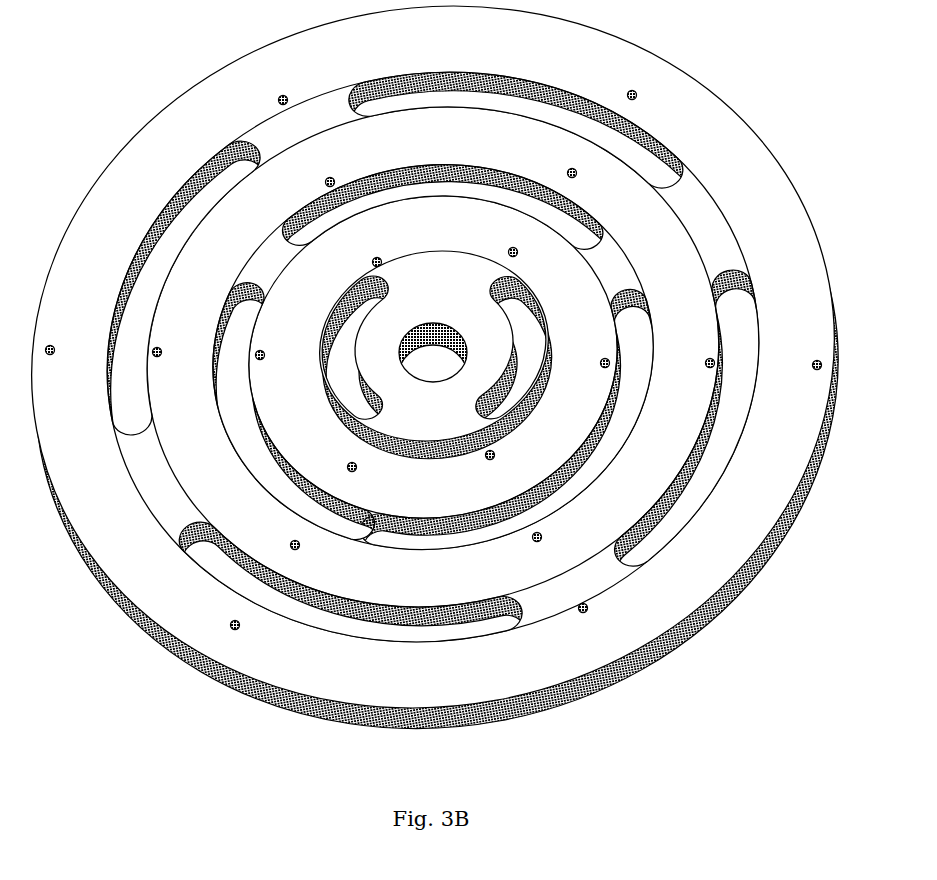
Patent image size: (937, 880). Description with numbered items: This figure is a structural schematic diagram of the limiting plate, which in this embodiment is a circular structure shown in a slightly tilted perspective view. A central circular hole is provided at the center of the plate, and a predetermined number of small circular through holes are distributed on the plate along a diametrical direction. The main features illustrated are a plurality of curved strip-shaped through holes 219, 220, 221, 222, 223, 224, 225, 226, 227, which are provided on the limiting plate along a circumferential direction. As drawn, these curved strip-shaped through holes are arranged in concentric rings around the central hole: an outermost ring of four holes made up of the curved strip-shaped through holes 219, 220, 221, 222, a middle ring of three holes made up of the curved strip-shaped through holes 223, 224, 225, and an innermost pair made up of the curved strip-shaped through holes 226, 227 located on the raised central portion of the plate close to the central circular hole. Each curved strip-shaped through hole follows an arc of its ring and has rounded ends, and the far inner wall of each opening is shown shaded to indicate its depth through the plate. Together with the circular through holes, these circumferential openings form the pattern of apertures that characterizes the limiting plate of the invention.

The curved strip-shaped through hole 219 is at (150, 267).
The curved strip-shaped through hole 220 is at (520, 108).
The curved strip-shaped through hole 221 is at (730, 428).
The curved strip-shaped through hole 222 is at (347, 627).
The curved strip-shaped through hole 223 is at (242, 417).
The curved strip-shaped through hole 224 is at (427, 193).
The curved strip-shaped through hole 225 is at (593, 465).
The curved strip-shaped through hole 226 is at (343, 337).
The curved strip-shaped through hole 227 is at (523, 347).